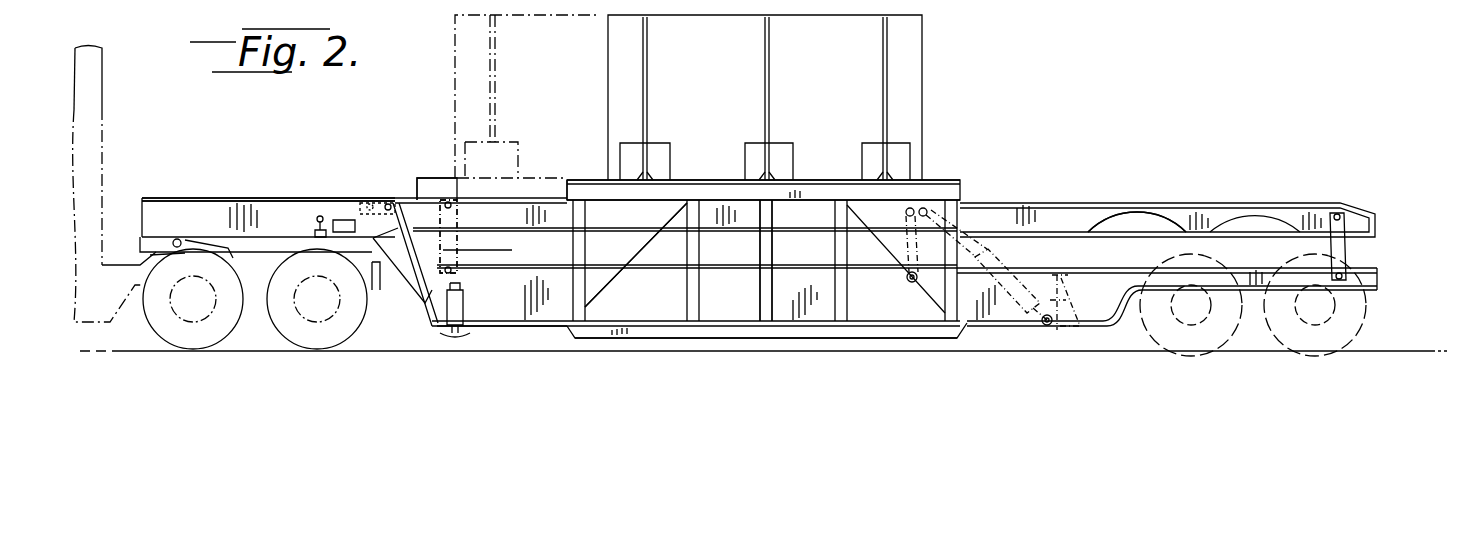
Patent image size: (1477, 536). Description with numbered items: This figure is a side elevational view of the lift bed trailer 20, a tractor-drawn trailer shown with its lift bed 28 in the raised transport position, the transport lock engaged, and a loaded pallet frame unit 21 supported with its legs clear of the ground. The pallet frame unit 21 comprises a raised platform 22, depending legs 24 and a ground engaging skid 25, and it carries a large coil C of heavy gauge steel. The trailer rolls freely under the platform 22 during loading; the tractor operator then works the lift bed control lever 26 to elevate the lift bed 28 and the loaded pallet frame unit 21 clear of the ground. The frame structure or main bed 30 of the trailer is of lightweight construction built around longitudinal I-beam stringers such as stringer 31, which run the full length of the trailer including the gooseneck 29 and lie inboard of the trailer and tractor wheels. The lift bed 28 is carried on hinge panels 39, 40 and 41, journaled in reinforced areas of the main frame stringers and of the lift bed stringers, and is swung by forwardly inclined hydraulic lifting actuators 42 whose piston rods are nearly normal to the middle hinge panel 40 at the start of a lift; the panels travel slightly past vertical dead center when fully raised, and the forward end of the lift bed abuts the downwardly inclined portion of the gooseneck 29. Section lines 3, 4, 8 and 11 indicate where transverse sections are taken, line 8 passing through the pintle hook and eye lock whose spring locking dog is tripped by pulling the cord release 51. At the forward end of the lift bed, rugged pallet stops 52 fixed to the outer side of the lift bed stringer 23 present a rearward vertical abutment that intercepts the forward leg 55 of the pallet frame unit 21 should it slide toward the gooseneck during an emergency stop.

The coil C is at (905, 72).
The lift bed trailer 20 is at (1162, 176).
The pallet frame unit 21 is at (940, 172).
The raised platform 22 is at (795, 198).
The outer stringer 23 is at (1076, 198).
The depending legs 24 is at (588, 313).
The ground engaging skid 25 is at (713, 340).
The lift bed control lever 26 is at (320, 215).
The lift bed 28 is at (1222, 196).
The gooseneck 29 is at (233, 196).
The main bed 30 is at (522, 336).
The longitudinal stringer 31 is at (478, 312).
The hinge panel 39 is at (455, 240).
The middle hinge panel 40 is at (903, 245).
The hinge panel 41 is at (1346, 256).
The hydraulic lifting actuator 42 is at (1000, 262).
The cord release 51 is at (343, 232).
The pallet stop 52 is at (353, 165).
The forward leg 55 is at (553, 200).
The section line 3 is at (1310, 148).
The section line 4 is at (1014, 145).
The section line 8- 8 is at (331, 202).
The section line 11 is at (122, 200).